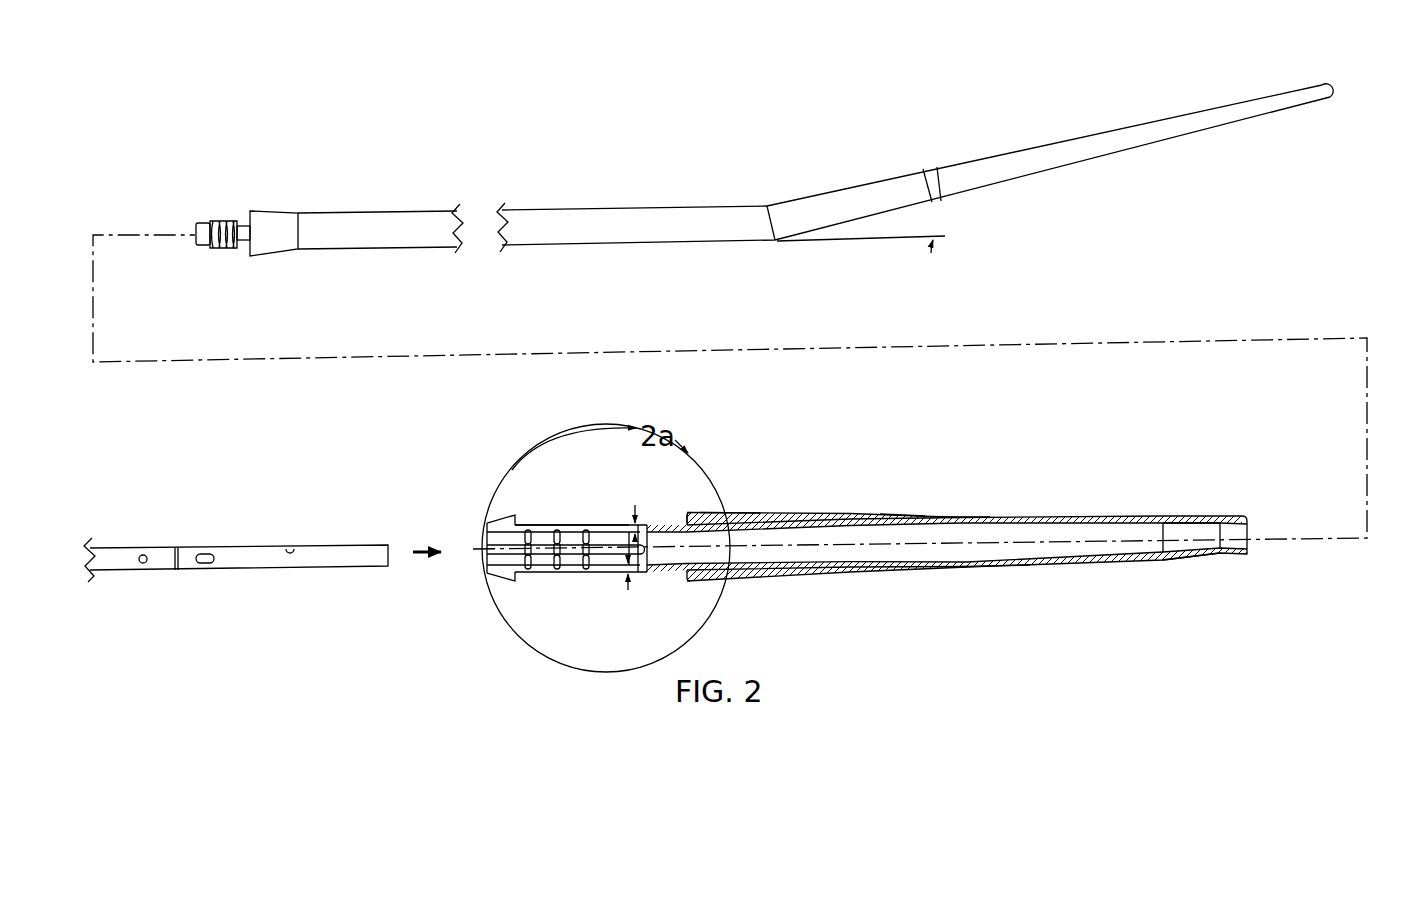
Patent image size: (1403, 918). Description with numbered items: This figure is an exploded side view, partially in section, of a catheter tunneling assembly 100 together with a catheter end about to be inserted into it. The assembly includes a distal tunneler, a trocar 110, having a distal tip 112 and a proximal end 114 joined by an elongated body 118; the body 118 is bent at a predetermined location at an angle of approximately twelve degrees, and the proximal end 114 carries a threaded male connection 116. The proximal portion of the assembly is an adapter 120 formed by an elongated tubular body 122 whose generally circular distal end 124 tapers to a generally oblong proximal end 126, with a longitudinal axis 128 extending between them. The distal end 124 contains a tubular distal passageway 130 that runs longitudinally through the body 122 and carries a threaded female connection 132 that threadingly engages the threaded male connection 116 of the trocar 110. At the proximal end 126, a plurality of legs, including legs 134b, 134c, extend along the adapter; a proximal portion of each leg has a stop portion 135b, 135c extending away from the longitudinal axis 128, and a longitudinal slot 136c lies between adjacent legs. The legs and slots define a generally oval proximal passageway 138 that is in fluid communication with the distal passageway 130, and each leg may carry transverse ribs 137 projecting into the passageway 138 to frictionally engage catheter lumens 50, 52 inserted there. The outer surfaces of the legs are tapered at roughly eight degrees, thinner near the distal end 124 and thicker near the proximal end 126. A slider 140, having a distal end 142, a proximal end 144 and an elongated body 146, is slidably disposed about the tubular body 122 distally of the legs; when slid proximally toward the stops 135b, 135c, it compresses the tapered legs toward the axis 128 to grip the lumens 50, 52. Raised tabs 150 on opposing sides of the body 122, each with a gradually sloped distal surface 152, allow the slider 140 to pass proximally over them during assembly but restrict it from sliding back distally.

The tunneling assembly 100 is at (493, 165).
The trocar 110 is at (772, 140).
The distal tip 112 is at (1328, 100).
The proximal end 114 is at (195, 220).
The threaded male connection 116 is at (228, 216).
The elongated body 118 is at (545, 208).
The catheter lumen 50 is at (221, 540).
The catheter lumen 52 is at (156, 572).
The adapter 120 is at (870, 582).
The elongated tubular body 122 is at (1039, 514).
The distal end 124 is at (1244, 512).
The proximal end 126 is at (498, 513).
The longitudinal axis 128 is at (1277, 541).
The distal passageway 130 is at (1109, 531).
The threaded female connection 132 is at (1226, 555).
The leg 134b is at (534, 580).
The leg 134c is at (538, 518).
The stop portion 135b is at (514, 583).
The stop portion 135c is at (518, 508).
The longitudinal slot 136c is at (541, 561).
The transverse ribs 137 is at (571, 521).
The proximal passageway 138 is at (668, 553).
The slider 140 is at (905, 514).
The distal end 142 is at (962, 518).
The proximal end 144 is at (690, 507).
The elongated body 146 is at (783, 512).
The raised tabs 150 is at (976, 572).
The sloped distal surface 152 is at (1006, 568).